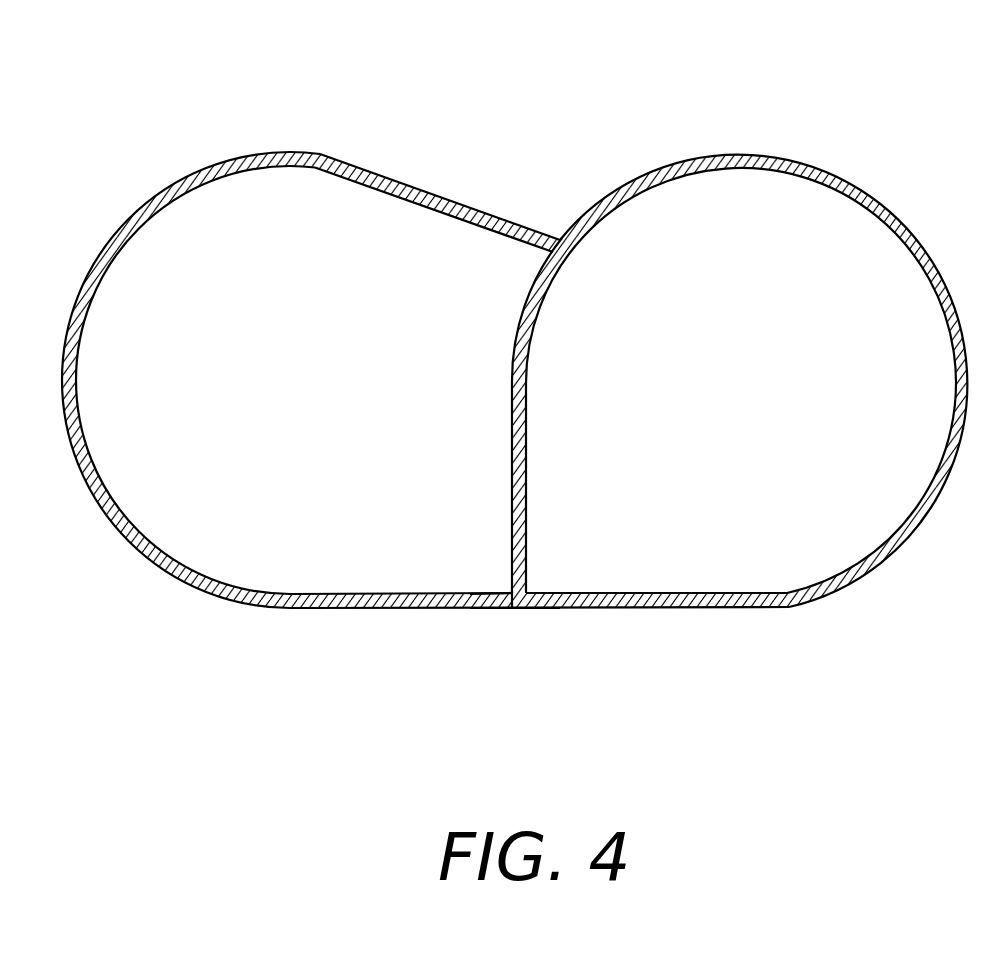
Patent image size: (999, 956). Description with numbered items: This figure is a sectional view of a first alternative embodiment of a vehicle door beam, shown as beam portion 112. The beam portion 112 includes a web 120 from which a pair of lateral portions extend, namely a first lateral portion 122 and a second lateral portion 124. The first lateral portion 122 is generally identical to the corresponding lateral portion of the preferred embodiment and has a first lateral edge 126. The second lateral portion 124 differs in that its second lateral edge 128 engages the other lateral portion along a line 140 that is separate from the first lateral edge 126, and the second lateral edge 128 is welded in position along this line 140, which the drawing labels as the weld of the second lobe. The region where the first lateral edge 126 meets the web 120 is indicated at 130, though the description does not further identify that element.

The beam portion 112 is at (765, 147).
The web 120 is at (686, 609).
The first lateral portion 122 is at (877, 198).
The second lateral portion 124 is at (346, 153).
The first lateral edge 126 is at (527, 585).
The second lateral edge 128 is at (520, 242).
The junction of divider wall and bottom wall 130 is at (512, 608).
The line 140 is at (565, 265).